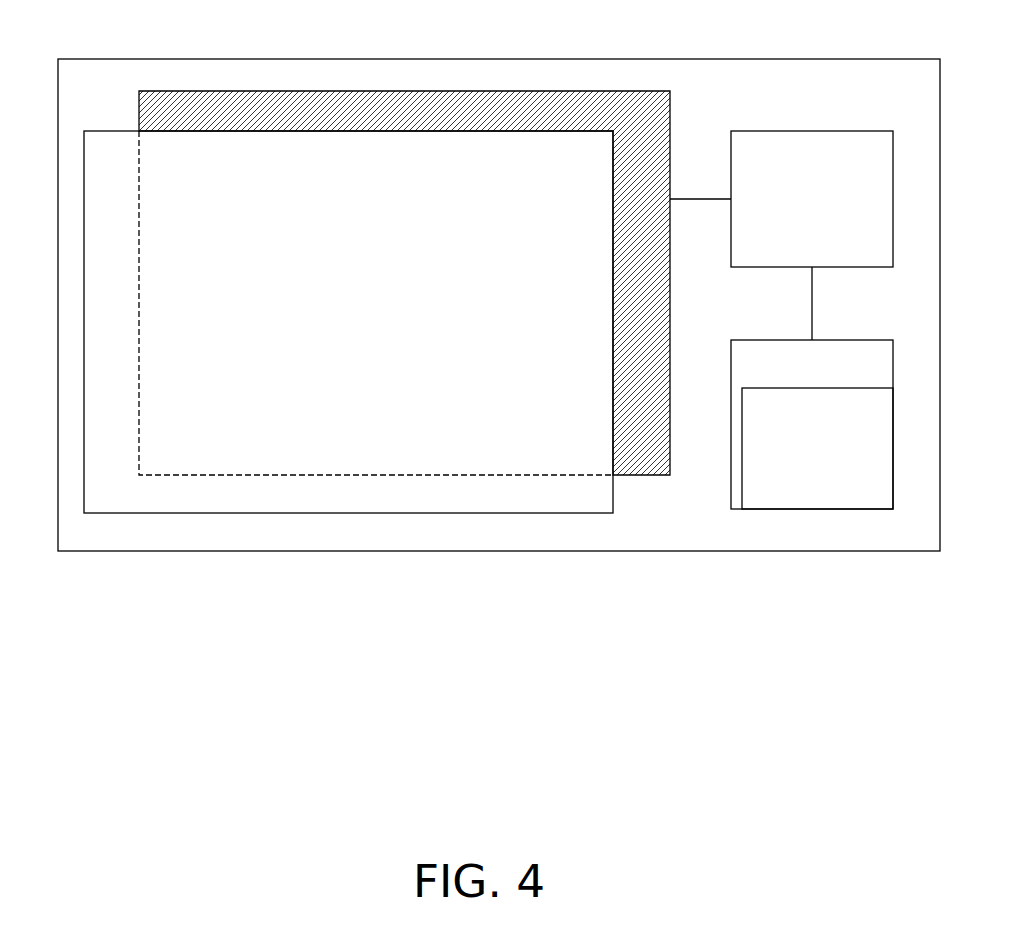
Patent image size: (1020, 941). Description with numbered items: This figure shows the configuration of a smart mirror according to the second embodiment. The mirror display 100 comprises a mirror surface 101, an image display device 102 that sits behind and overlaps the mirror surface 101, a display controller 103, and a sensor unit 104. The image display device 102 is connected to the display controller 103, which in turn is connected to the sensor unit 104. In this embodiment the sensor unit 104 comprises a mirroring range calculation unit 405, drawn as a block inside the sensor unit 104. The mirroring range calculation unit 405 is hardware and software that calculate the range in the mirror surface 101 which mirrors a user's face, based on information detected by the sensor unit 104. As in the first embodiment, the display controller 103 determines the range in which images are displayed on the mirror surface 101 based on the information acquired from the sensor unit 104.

The mirror display 100 is at (499, 280).
The mirror surface 101 is at (348, 367).
The image display device 102 is at (404, 242).
The display controller 103 is at (812, 177).
The sensor unit 104 is at (835, 403).
The mirroring range calculation unit 405 is at (841, 448).